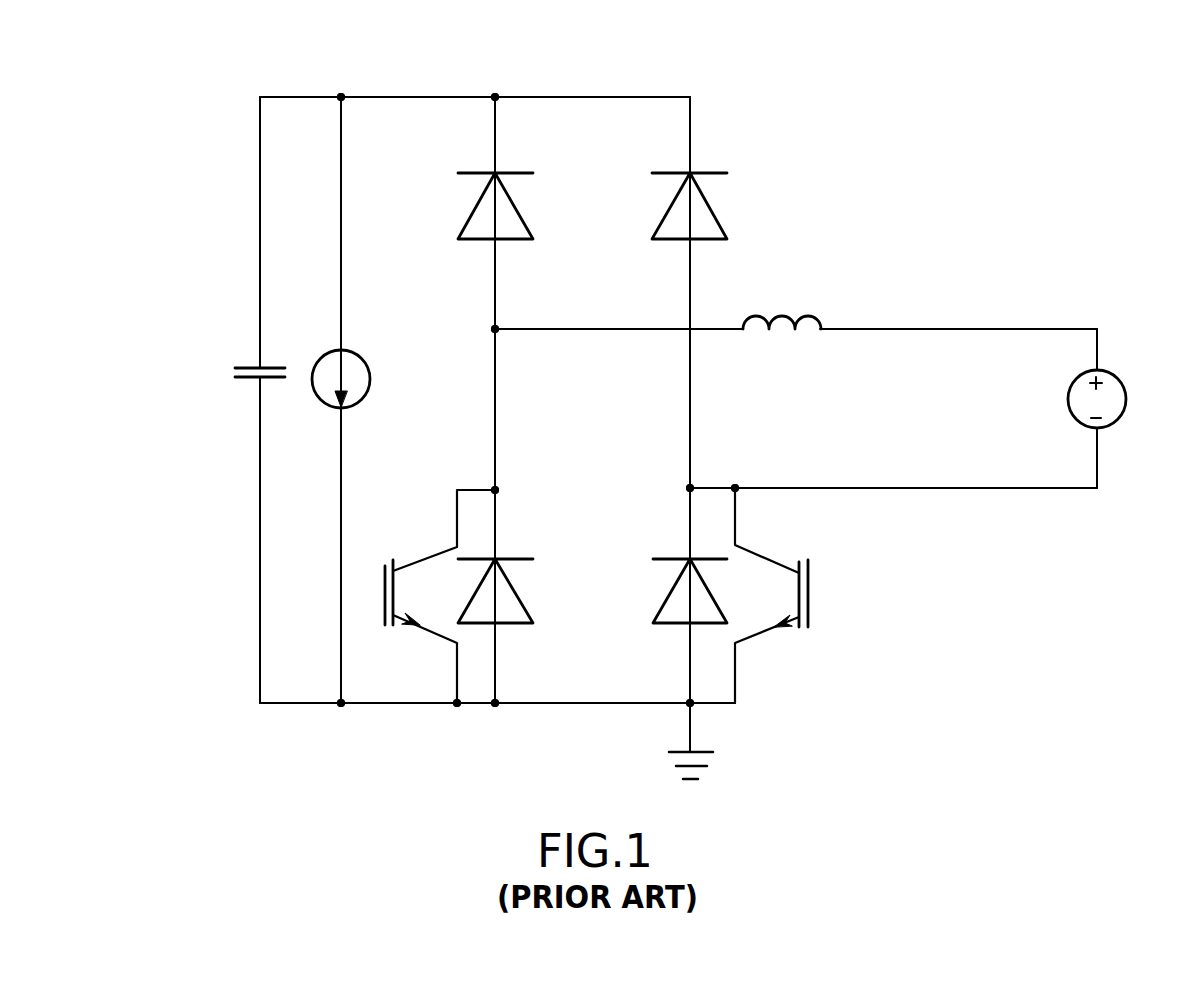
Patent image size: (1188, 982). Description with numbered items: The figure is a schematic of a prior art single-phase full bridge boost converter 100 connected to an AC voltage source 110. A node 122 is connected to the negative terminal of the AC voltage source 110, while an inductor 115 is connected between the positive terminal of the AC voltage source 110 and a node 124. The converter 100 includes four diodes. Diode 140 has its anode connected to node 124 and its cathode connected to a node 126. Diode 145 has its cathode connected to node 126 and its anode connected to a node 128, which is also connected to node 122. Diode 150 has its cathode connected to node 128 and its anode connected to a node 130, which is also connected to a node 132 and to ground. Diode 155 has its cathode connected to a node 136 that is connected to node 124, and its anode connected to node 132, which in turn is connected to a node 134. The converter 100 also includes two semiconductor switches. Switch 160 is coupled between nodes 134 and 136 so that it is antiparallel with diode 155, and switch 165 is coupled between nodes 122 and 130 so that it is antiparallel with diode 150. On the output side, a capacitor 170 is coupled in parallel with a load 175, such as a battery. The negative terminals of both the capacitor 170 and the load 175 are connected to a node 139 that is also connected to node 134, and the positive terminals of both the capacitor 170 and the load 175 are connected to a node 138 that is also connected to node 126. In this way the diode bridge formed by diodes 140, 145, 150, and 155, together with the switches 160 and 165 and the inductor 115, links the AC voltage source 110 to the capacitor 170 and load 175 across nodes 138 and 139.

The single-phase full bridge boost converter 100 is at (110, 115).
The AC voltage source 110 is at (1118, 380).
The inductor 115 is at (820, 326).
The node 122 is at (737, 488).
The node 124 is at (497, 329).
The node 126 is at (495, 97).
The node 128 is at (688, 487).
The node 130 is at (693, 706).
The node 132 is at (497, 705).
The node 134 is at (457, 705).
The node 136 is at (497, 490).
The node 138 is at (341, 97).
The node 139 is at (342, 705).
The diode 140 is at (512, 173).
The diode 145 is at (705, 173).
The diode 150 is at (662, 622).
The diode 155 is at (515, 559).
The switch 160 is at (385, 567).
The switch 165 is at (808, 572).
The capacitor 170 is at (240, 368).
The load 175 is at (360, 355).